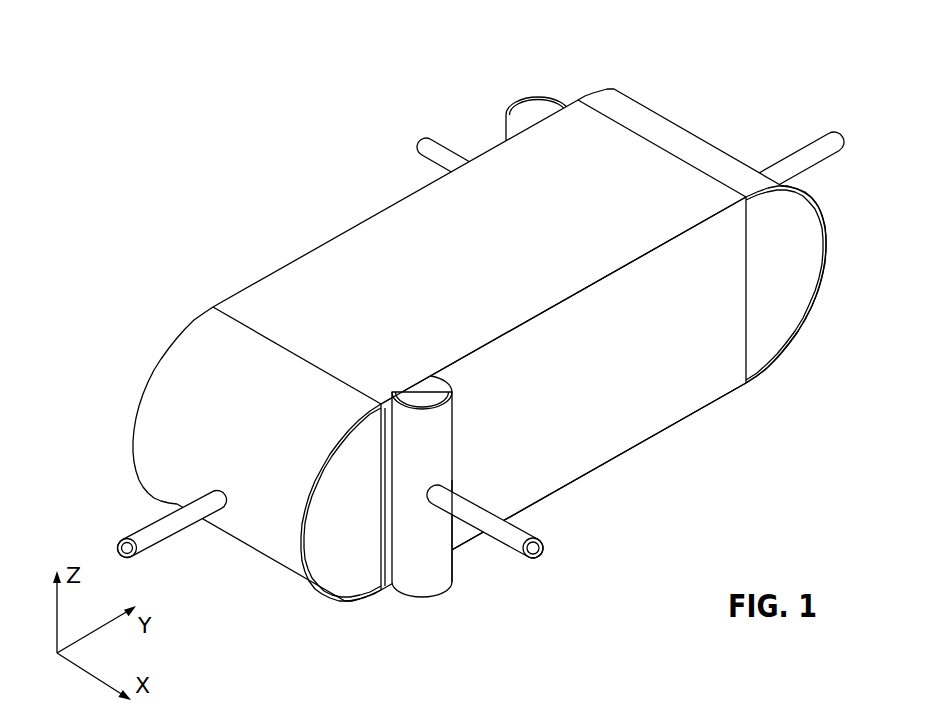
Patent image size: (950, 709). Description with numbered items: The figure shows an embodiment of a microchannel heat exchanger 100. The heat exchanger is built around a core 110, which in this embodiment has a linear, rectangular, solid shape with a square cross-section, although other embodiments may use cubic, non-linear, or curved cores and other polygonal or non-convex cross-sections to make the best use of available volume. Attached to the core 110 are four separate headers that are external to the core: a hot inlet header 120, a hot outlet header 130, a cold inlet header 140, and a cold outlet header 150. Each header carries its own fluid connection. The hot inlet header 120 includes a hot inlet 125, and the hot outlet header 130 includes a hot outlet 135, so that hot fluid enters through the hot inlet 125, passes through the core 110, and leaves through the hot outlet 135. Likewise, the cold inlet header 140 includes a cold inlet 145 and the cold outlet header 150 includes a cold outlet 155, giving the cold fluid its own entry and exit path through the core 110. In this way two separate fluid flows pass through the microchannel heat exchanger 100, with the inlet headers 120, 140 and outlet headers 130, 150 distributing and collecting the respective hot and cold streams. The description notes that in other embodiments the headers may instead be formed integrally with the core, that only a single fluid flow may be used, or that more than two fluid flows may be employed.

The microchannel heat exchanger 100 is at (749, 52).
The core 110 is at (330, 240).
The hot inlet header 120 is at (307, 588).
The hot inlet 125 is at (127, 531).
The hot outlet header 130 is at (828, 242).
The hot outlet 135 is at (810, 138).
The cold inlet header 140 is at (532, 97).
The cold inlet 145 is at (432, 135).
The cold outlet header 150 is at (452, 583).
The cold outlet 155 is at (543, 530).